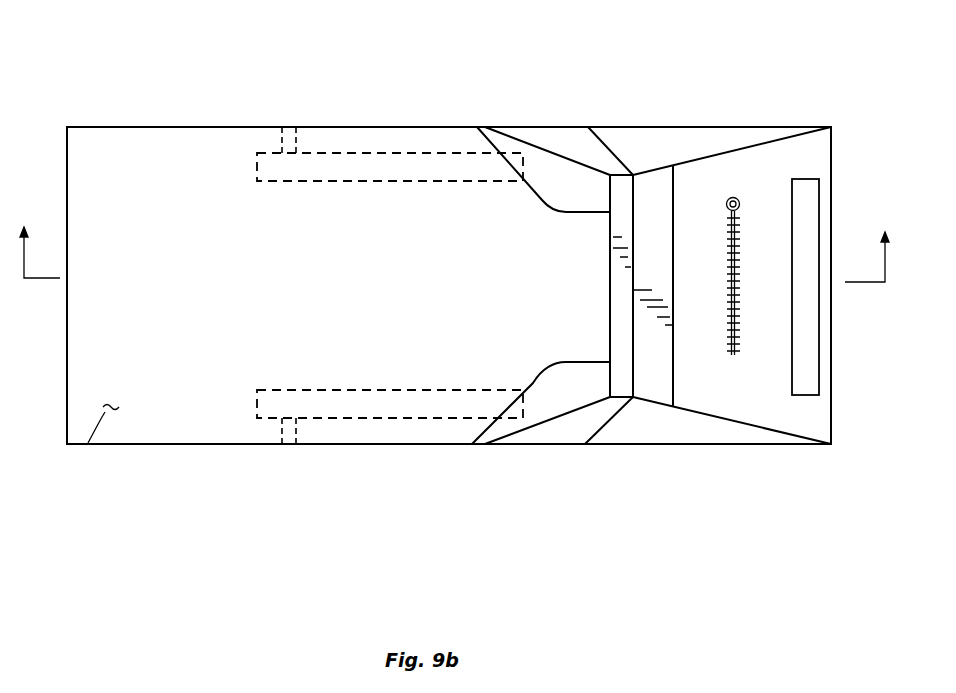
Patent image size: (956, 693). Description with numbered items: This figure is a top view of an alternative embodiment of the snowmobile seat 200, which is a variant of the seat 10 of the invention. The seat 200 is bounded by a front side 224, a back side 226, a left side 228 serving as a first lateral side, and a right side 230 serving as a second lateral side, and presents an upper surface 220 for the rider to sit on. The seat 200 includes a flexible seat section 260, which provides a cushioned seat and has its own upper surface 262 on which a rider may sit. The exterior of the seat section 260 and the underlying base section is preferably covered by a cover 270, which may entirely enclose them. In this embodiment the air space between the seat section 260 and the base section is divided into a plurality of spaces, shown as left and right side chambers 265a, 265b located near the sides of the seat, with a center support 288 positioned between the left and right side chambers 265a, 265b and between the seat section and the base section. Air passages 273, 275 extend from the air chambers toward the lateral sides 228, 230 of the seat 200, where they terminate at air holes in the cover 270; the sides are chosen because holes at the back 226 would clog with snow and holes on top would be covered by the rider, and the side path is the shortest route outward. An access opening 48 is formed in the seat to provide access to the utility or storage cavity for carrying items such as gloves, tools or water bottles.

The snowmobile seat 200 is at (443, 508).
The front side 224 is at (67, 156).
The back side 226 is at (833, 178).
The right side 230 is at (218, 122).
The upper surface 220 is at (157, 435).
The seat section 260 is at (133, 145).
The left side 228 is at (243, 435).
The right side chamber 265b is at (340, 167).
The left side chamber 265a is at (388, 418).
The air passage 275 is at (497, 128).
The air passage 273 is at (497, 450).
The center support 288 is at (427, 225).
The upper surface of seat section 262 is at (541, 230).
The access opening 48 is at (741, 206).
The cover 270 is at (83, 450).
The seat 10 is at (457, 242).